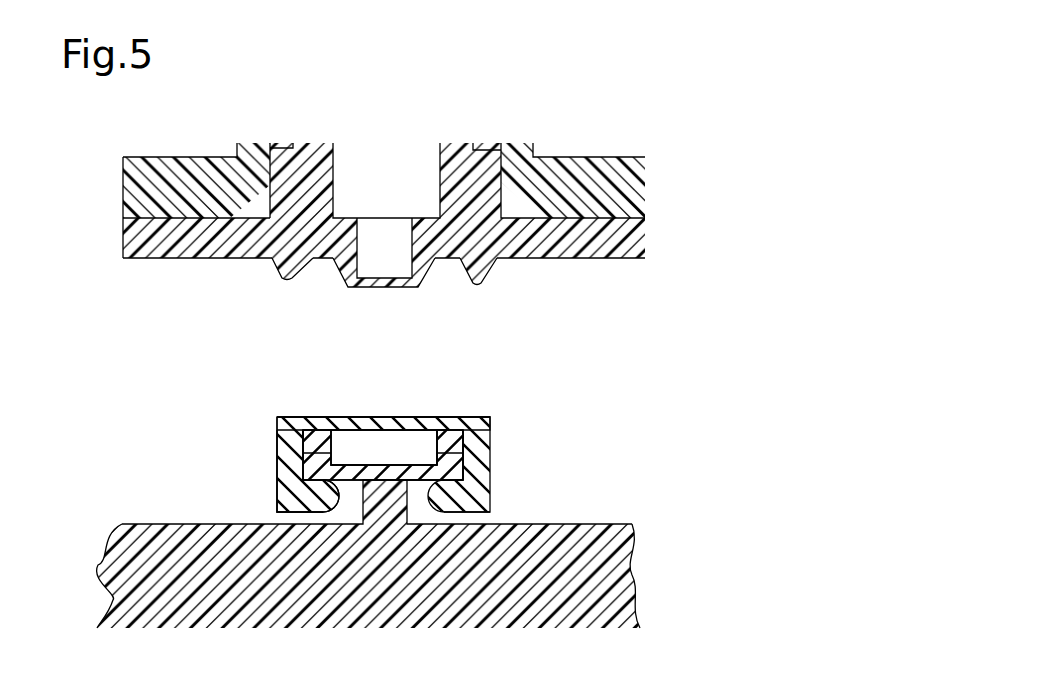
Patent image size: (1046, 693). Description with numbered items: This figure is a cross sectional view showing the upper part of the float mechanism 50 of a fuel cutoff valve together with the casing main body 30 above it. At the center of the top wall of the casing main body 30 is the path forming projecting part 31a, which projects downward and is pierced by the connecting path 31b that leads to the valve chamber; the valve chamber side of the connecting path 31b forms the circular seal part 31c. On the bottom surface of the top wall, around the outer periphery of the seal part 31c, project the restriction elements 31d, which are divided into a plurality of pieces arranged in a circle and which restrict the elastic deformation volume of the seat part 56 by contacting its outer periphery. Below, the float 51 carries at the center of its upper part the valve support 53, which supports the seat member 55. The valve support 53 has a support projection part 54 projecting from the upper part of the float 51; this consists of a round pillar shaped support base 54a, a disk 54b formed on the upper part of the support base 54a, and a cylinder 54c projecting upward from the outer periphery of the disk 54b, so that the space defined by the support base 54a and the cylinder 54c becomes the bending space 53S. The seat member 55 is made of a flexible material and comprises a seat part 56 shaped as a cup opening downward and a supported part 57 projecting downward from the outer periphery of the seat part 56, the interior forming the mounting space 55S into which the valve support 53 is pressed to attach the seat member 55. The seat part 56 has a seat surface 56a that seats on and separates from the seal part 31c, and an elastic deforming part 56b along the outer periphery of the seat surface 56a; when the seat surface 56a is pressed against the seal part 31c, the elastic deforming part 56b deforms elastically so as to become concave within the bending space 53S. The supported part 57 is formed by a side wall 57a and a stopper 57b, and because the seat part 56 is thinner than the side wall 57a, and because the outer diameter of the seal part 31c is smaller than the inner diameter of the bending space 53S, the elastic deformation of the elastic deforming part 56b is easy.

The casing main body 30 is at (590, 250).
The path forming projecting part 31a is at (330, 262).
The connecting path 31b is at (395, 245).
The seal part 31c is at (418, 287).
The restriction element 31d is at (488, 268).
The float mechanism 50 is at (735, 524).
The float 51 is at (567, 524).
The valve support 53 is at (682, 313).
The bending space 53S is at (418, 442).
The support projection part 54 is at (618, 358).
The support base 54a is at (432, 498).
The disk 54b is at (465, 456).
The cylinder 54c is at (440, 456).
The seat member 55 is at (158, 365).
The mounting space 55S is at (334, 456).
The seat part 56 is at (205, 340).
The seat surface 56a is at (355, 418).
The elastic deforming part 56b is at (335, 422).
The supported part 57 is at (205, 420).
The side wall 57a is at (278, 445).
The stopper 57b is at (318, 500).